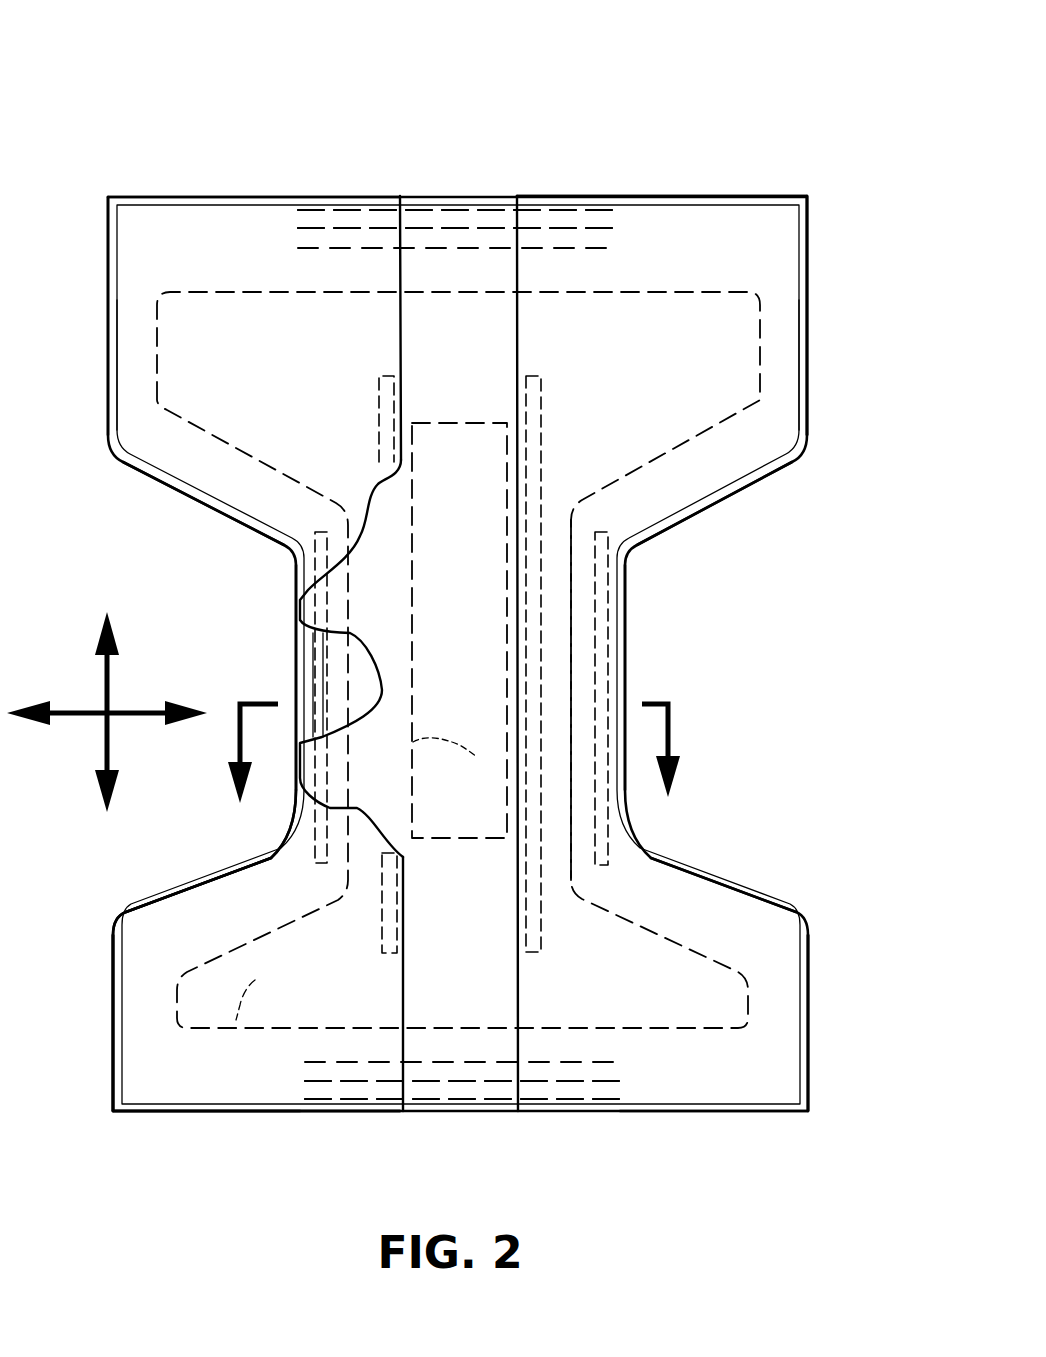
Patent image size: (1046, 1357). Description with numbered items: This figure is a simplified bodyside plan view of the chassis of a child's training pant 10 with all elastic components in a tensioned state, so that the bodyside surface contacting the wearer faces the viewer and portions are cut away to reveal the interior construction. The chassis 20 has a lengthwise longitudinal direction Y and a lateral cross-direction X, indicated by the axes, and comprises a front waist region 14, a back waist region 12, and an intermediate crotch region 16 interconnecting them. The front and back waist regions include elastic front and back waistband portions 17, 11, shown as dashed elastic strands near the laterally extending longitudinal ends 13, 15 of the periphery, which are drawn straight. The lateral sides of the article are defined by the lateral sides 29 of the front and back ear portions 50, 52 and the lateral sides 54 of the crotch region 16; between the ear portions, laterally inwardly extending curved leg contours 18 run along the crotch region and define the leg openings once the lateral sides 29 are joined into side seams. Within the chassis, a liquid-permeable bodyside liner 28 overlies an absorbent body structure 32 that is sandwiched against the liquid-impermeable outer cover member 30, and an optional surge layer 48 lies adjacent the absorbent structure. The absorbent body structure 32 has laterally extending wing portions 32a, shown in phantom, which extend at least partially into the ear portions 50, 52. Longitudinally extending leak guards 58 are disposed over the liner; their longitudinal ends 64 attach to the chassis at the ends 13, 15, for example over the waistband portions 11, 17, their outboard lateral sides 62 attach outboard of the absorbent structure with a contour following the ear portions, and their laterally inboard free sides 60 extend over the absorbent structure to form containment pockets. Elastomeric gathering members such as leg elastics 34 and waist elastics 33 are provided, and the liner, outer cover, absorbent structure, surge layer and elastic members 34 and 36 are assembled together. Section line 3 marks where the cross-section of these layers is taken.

The child's training pant 10 is at (197, 105).
The elastic back waistband portion 11 is at (460, 222).
The back waist region 12 is at (659, 224).
The longitudinal end 13 is at (650, 195).
The front waist region 14 is at (250, 912).
The longitudinal end 15 is at (233, 1111).
The intermediate crotch region 16 is at (715, 680).
The elastic front waistband portion 17 is at (455, 1073).
The curved leg contours 18 is at (230, 542).
The chassis 20 is at (312, 188).
The bodyside liner 28 is at (382, 593).
The lateral sides 29 is at (807, 217).
The outer cover member 30 is at (340, 683).
The absorbent body structure 32 is at (570, 343).
The wing portions 32a is at (188, 352).
The waist elastics 33 is at (350, 218).
The leg elastics 34 is at (318, 668).
The elastic members 36 is at (395, 405).
The surge layer 48 is at (413, 742).
The front ear portion 50 is at (135, 1060).
The back ear portion 52 is at (120, 392).
The lateral sides of the crotch region 54 is at (627, 608).
The leak guards 58 is at (305, 392).
The laterally inboard free side 60 is at (401, 360).
The outboard lateral side 62 is at (113, 257).
The longitudinal ends 64 is at (560, 195).
The section line 3- 3 is at (453, 755).
The lateral transverse cross-direction X is at (102, 715).
The longitudinal direction Y is at (110, 673).